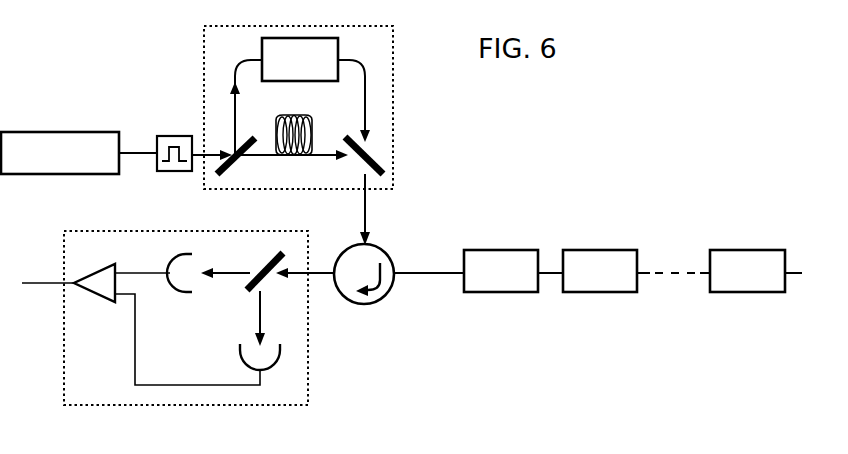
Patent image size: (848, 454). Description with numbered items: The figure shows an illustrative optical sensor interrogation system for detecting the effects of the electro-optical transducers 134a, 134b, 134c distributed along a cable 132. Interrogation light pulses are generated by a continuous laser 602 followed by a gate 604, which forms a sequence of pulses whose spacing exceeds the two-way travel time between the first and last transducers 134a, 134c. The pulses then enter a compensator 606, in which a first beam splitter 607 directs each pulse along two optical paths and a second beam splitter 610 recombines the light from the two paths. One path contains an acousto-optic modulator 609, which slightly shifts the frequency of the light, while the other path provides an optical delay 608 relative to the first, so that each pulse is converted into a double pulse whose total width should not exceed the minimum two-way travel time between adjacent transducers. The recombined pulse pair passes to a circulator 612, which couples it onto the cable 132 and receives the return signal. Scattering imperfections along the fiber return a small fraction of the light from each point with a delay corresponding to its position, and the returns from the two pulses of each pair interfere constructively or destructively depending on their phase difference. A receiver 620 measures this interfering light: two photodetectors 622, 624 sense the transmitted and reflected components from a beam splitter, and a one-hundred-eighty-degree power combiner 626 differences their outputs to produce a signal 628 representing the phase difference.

The continuous laser 602 is at (45, 175).
The gate 604 is at (188, 173).
The compensator 606 is at (240, 191).
The first beam splitter 607 is at (240, 159).
The optical delay 608 is at (296, 156).
The acousto-optic modulator 609 is at (298, 83).
The second beam splitter 610 is at (352, 142).
The circulator 612 is at (386, 259).
The cable 132 is at (441, 280).
The electro-optical transducer 134a is at (493, 294).
The electro-optical transducer 134b is at (591, 294).
The electro-optical transducer 134c is at (743, 294).
The receiver 620 is at (100, 406).
The photodetector 622 is at (174, 266).
The photodetector 624 is at (239, 353).
The 180° power combiner 626 is at (107, 268).
The signal 628 is at (45, 283).